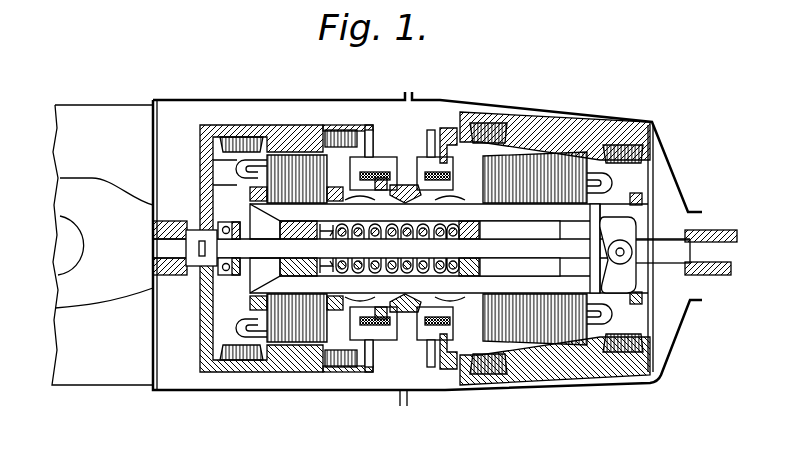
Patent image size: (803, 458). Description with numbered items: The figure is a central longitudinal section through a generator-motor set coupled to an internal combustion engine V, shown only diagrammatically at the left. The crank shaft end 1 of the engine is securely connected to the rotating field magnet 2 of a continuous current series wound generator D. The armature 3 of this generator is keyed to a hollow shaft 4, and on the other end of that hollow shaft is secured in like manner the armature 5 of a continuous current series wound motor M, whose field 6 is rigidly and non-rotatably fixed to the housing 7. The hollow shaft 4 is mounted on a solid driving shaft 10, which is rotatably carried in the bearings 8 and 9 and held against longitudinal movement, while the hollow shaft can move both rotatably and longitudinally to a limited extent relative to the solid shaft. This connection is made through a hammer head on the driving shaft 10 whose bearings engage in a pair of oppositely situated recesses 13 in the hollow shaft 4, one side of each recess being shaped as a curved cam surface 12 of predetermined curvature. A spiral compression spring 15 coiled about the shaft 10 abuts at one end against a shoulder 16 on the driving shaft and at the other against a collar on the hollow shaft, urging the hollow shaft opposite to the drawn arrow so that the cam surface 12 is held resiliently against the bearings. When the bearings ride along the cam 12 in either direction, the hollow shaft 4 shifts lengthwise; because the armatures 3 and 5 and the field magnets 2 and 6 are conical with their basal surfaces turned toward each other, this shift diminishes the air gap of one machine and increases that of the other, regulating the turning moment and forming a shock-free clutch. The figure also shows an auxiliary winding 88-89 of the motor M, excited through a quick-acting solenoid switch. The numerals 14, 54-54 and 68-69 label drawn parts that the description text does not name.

The internal combustion engine V is at (115, 122).
The crank shaft end 1 is at (175, 248).
The rotating field magnet 2 is at (280, 135).
The armature 3 is at (310, 370).
The hollow shaft 4 is at (251, 204).
The armature 5 is at (512, 362).
The field 6 is at (557, 140).
The housing 7 is at (498, 106).
The bearing 8 is at (233, 261).
The bearing 9 is at (715, 270).
The driving shaft 10 is at (672, 257).
The curved cam surface 12 is at (628, 231).
The slot or recess 13 is at (621, 292).
The sleeve 14 is at (607, 217).
The spiral compression spring 15 is at (367, 268).
The shoulder 16 is at (456, 270).
The dynamo field winding 54-54 is at (233, 123).
The auxiliary winding 88-89 is at (645, 153).
The motor field winding 68-69 is at (615, 345).
The generator D is at (272, 362).
The motor M is at (562, 370).